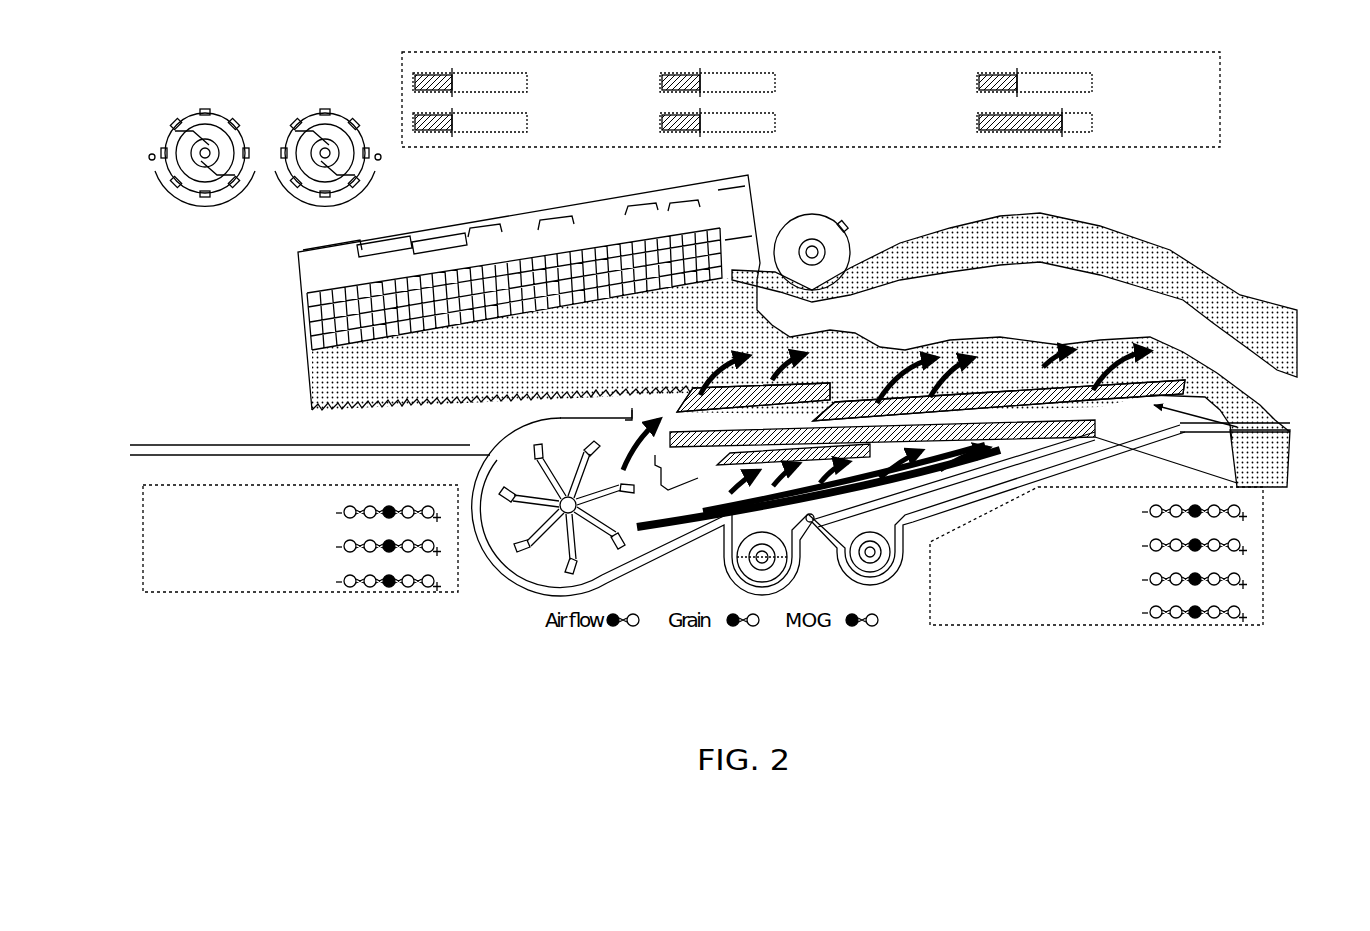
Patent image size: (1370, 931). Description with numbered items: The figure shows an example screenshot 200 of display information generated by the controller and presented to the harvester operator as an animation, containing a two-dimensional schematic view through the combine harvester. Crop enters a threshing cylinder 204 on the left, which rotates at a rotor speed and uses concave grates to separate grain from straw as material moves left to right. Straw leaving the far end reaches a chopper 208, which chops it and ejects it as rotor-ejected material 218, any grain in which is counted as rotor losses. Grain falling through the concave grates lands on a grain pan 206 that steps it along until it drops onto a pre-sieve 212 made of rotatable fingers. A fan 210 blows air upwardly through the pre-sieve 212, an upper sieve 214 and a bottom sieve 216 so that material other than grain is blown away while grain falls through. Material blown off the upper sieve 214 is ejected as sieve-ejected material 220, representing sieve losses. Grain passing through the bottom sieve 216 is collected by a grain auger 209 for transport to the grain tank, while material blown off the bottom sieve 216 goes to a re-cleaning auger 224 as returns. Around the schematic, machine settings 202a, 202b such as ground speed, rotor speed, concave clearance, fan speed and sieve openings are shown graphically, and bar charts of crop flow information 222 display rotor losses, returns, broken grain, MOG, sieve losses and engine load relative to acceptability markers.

The screenshot 200 is at (134, 233).
The machine settings 202a is at (240, 595).
The machine settings 202b is at (1265, 577).
The threshing cylinder 204 is at (408, 214).
The grain pan 206 is at (320, 421).
The chopper 208 is at (850, 237).
The grain auger 209 is at (766, 572).
The fan 210 is at (486, 528).
The pre-sieve 212 is at (846, 370).
The upper sieve 214 is at (1232, 446).
The bottom sieve 216 is at (1237, 485).
The rotor-ejected material 218 is at (1245, 285).
The sieve-ejected material 220 is at (1276, 406).
The crop flow information 222 is at (1222, 93).
The re-cleaning auger 224 is at (886, 575).